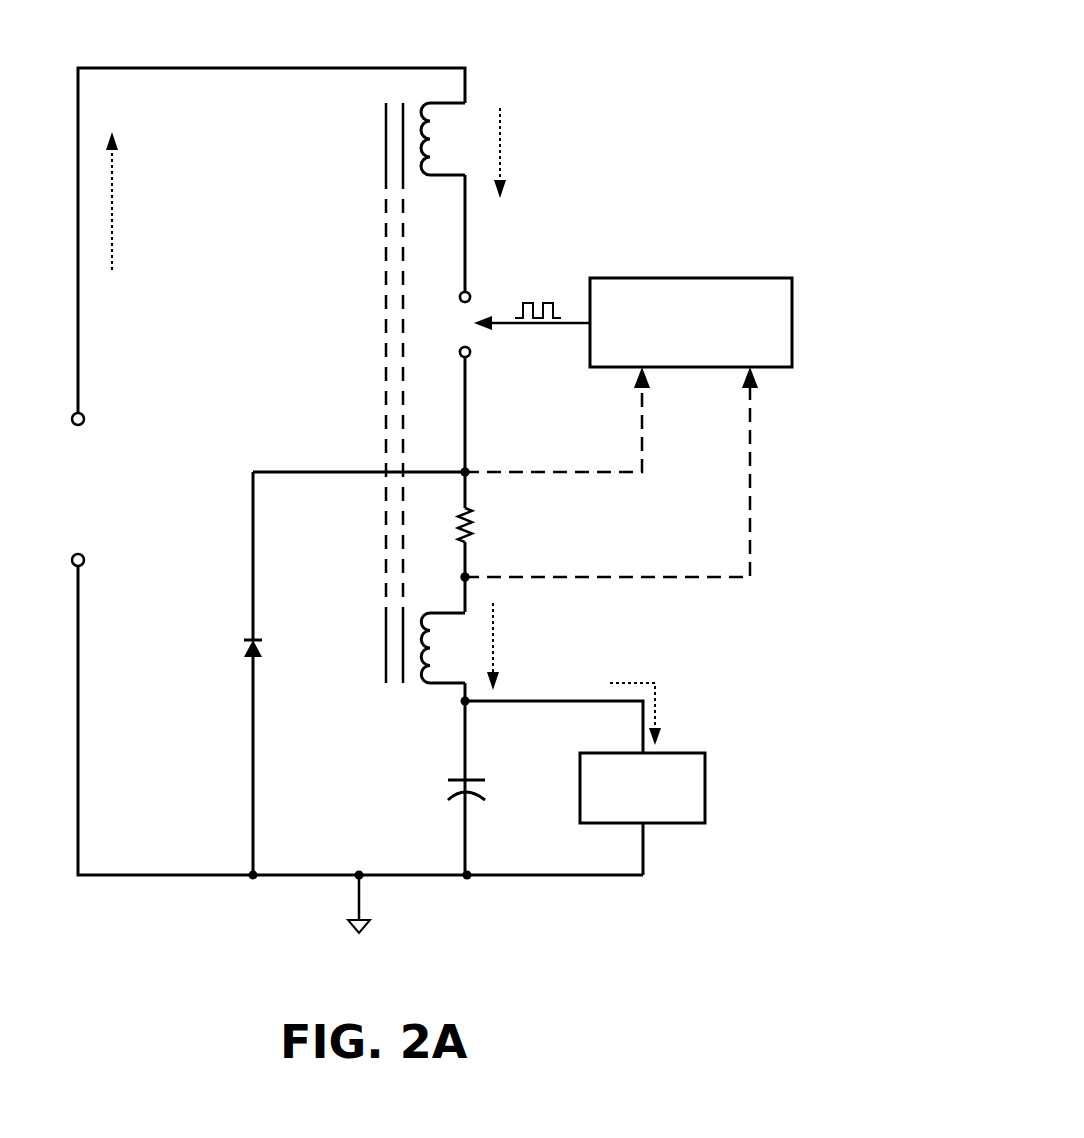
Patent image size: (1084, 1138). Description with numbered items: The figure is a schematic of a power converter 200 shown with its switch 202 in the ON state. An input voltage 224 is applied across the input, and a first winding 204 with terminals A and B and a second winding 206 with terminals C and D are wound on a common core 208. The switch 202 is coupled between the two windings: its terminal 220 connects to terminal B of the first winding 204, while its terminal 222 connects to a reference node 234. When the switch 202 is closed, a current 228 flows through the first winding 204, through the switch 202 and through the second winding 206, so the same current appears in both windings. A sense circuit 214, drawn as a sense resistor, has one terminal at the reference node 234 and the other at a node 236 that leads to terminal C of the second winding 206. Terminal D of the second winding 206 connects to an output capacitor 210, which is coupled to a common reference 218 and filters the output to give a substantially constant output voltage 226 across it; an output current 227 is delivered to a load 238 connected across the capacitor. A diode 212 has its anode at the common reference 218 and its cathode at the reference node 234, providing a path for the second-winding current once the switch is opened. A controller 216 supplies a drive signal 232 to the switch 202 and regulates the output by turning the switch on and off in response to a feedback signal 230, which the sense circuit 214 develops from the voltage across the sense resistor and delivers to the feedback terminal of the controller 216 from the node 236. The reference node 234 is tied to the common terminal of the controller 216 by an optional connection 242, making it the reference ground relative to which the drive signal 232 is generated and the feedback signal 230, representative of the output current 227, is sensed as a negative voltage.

The power converter 200 is at (704, 70).
The switch S1 202 is at (448, 300).
The first winding 204 is at (476, 121).
The second winding 206 is at (427, 690).
The core 208 is at (378, 142).
The output capacitor CO 210 is at (406, 776).
The diode D1 212 is at (222, 638).
The sense circuit 214 is at (608, 530).
The controller 216 is at (674, 347).
The common reference 218 is at (368, 902).
The terminal 220 is at (474, 290).
The terminal 222 is at (456, 366).
The input voltage VIN 224 is at (106, 496).
The output voltage VO 226 is at (534, 774).
The output current IO 227 is at (696, 698).
The current ION 228 is at (136, 184).
The feedback signal 230 is at (760, 474).
The drive signal 232 is at (544, 298).
The reference node 234 is at (472, 466).
The node 236 is at (458, 570).
The load 238 is at (625, 812).
The optional connection 242 is at (580, 464).